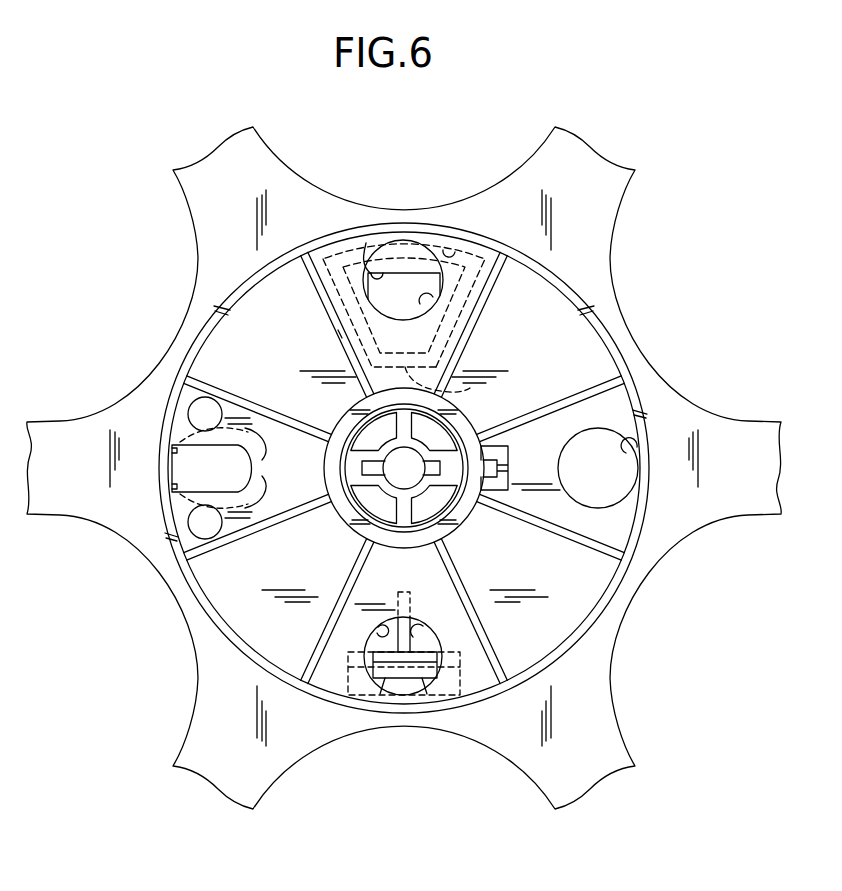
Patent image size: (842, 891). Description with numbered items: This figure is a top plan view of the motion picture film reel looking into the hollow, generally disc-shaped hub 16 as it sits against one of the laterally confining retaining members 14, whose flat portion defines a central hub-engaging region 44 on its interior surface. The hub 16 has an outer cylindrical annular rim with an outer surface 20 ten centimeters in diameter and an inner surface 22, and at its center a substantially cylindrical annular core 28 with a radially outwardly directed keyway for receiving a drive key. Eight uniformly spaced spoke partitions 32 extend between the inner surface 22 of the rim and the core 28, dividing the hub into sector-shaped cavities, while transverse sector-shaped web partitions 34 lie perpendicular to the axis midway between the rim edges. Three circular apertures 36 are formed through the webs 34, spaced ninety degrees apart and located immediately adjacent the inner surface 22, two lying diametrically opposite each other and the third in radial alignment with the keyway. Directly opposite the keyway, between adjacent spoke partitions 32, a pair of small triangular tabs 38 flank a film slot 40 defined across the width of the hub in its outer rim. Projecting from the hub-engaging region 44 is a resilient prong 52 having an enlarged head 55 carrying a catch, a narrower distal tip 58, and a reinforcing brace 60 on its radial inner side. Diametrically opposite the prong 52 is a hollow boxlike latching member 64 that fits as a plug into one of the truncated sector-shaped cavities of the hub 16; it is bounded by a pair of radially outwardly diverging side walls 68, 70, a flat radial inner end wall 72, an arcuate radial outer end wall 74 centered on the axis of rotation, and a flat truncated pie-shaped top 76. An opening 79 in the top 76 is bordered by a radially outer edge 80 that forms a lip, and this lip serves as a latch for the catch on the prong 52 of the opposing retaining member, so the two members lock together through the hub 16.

The laterally confining retaining member 14 is at (640, 745).
The hub 16 is at (602, 629).
The outer surface 20 is at (200, 607).
The inner surface 22 is at (455, 251).
The core 28 is at (343, 410).
The spoke partitions 32 is at (324, 302).
The web partitions 34 is at (405, 337).
The circular apertures 36 is at (433, 300).
The tabs 38 is at (250, 504).
The film slot 40 is at (172, 465).
The hub-engaging region 44 is at (578, 700).
The resilient prong 52 is at (405, 692).
The head 55 is at (423, 680).
The distal tip 58 is at (384, 680).
The reinforcing brace 60 is at (418, 634).
The latching member 64 is at (340, 334).
The side wall 68 is at (364, 349).
The side wall 70 is at (446, 348).
The radial inner end wall 72 is at (458, 391).
The radial outer end wall 74 is at (367, 244).
The top 76 is at (417, 247).
The opening 79 is at (362, 243).
The radially outer edge 80 is at (402, 268).